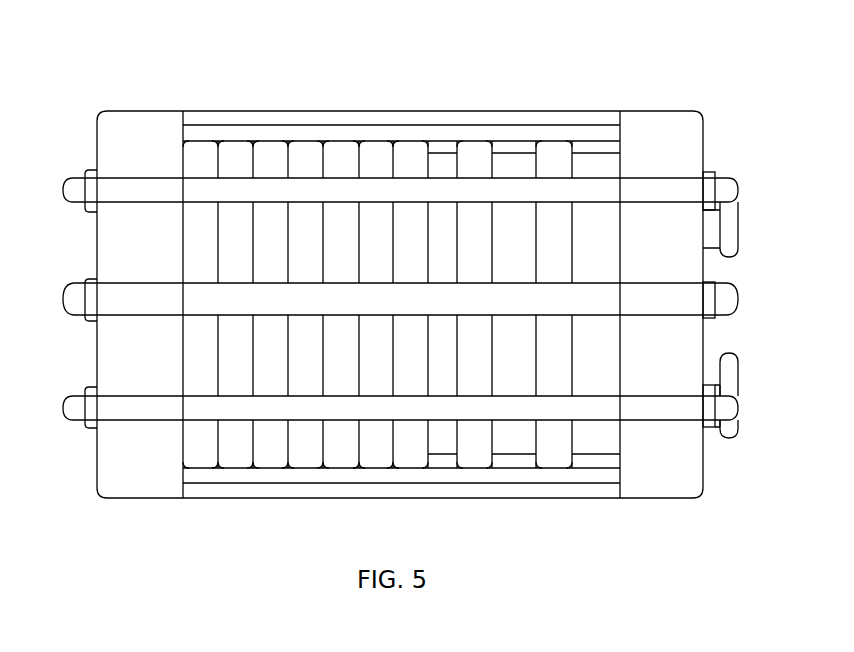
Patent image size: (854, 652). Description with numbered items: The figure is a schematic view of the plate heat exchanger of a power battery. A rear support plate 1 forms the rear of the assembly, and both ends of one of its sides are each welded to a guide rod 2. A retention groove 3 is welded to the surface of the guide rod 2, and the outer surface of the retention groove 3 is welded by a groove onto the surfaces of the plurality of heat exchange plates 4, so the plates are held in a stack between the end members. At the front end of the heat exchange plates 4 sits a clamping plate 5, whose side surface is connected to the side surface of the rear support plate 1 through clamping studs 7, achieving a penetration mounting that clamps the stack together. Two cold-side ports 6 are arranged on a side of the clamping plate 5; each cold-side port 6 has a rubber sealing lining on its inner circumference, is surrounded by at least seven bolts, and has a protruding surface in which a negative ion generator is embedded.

The rear support plate 1 is at (120, 153).
The guide rod 2 is at (447, 118).
The retention groove 3 is at (612, 135).
The heat exchange plate 4 is at (277, 148).
The clamping plate 5 is at (682, 157).
The cold-side port 6 is at (732, 222).
The clamping stud 7 is at (148, 300).